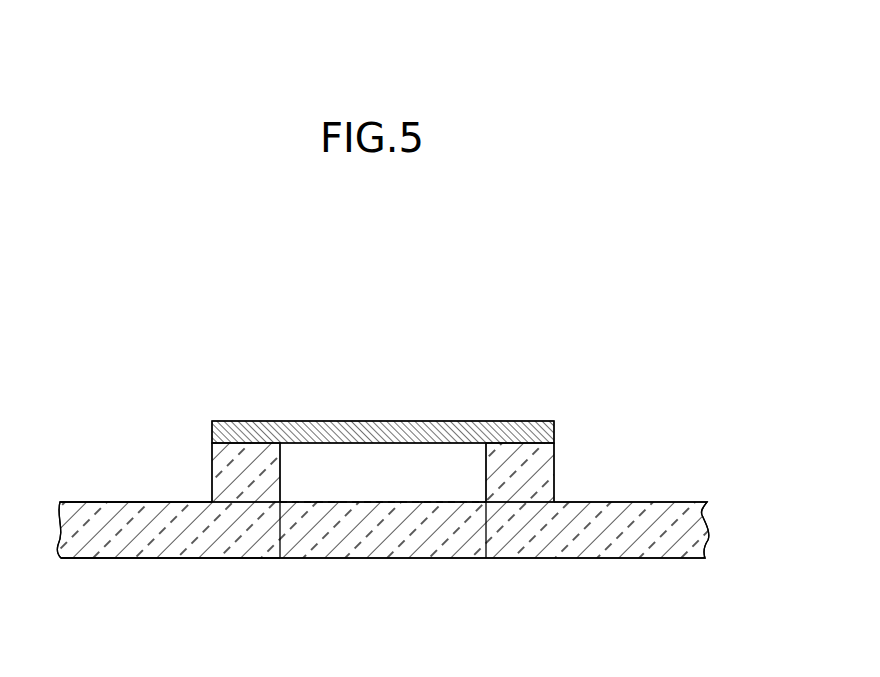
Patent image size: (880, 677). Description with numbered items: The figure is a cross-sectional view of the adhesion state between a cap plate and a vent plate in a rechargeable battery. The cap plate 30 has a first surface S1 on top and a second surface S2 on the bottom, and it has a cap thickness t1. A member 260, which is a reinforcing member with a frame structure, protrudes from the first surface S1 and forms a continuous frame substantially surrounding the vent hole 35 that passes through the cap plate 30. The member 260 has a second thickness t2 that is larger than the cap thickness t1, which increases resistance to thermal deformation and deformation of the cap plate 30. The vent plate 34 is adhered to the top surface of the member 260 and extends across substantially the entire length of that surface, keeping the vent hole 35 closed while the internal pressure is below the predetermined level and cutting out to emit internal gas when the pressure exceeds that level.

The cap plate 30 is at (597, 548).
The member 260 is at (238, 463).
The vent plate 34 is at (330, 432).
The vent hole 35 is at (370, 548).
The first surface S1 is at (110, 493).
The second surface S2 is at (118, 566).
The cap thickness t1 is at (707, 502).
The second thickness t2 is at (554, 421).